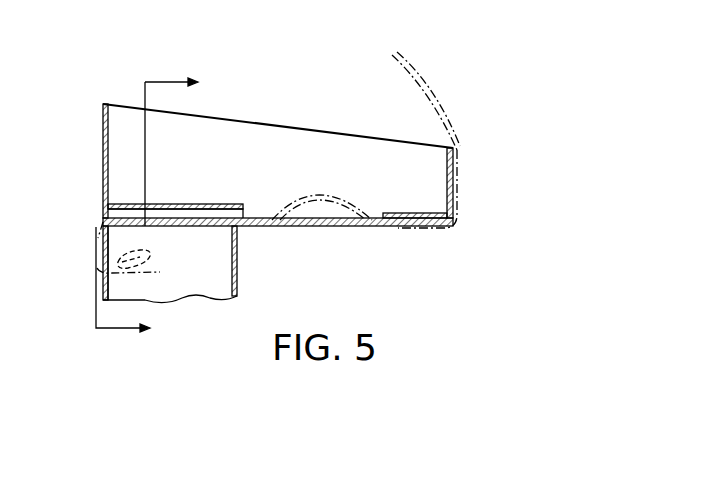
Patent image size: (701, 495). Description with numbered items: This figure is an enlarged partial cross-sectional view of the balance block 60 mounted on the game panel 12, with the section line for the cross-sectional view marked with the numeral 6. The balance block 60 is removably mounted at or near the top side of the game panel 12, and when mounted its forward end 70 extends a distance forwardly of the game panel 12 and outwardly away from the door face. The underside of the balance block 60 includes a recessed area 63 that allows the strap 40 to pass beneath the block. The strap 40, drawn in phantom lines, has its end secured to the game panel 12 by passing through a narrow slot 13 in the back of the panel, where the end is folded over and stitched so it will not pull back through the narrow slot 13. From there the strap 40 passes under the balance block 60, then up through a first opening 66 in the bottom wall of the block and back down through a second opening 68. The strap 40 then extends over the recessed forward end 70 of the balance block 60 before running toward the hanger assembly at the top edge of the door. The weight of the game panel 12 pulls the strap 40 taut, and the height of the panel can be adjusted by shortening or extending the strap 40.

The section line 6- 6 is at (147, 204).
The game panel 12 is at (98, 282).
The narrow slot 13 is at (104, 270).
The adjustable length strap 40 is at (425, 80).
The balance block 60 is at (263, 123).
The recessed area 63 is at (182, 229).
The first opening 66 is at (276, 221).
The second opening 68 is at (368, 221).
The forward end 70 is at (459, 178).